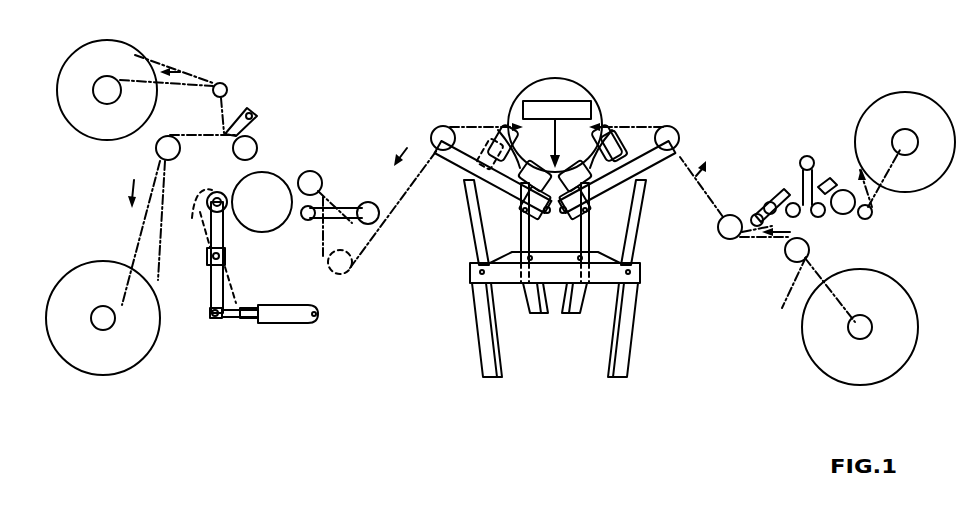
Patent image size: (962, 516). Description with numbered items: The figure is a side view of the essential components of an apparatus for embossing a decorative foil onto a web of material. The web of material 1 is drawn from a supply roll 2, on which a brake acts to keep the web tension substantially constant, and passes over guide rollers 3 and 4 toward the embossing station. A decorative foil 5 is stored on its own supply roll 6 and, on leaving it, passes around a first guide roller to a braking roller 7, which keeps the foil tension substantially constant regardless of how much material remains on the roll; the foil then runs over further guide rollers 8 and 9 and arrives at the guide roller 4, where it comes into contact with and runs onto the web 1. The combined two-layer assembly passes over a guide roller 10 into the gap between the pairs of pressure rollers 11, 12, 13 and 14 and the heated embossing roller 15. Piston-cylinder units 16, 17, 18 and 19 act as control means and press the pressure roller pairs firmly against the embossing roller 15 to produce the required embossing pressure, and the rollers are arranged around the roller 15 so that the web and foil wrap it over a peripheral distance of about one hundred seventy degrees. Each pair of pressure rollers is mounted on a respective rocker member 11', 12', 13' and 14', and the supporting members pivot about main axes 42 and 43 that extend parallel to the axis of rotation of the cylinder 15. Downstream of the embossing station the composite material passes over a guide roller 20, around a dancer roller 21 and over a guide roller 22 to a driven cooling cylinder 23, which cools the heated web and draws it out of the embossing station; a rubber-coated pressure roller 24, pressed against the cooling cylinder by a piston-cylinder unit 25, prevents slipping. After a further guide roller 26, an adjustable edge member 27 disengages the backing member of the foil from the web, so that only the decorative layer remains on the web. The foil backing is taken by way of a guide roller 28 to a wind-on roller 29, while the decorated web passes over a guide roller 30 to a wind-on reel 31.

The web of material 1 is at (786, 295).
The supply roll 2 is at (885, 358).
The guide roller 3 is at (790, 262).
The guide roller 4 is at (725, 240).
The embossing foil 5 is at (870, 216).
The supply roll 6 is at (930, 112).
The braking roller 7 is at (842, 190).
The guide roller 8 is at (800, 162).
The guide roller 9 is at (756, 214).
The guide roller 10 is at (678, 133).
The pressure roller pair 11 is at (613, 130).
The rocker member 11' is at (632, 146).
The pressure roller pair 12 is at (575, 156).
The rocker member 12' is at (601, 203).
The pressure roller pair 13 is at (535, 156).
The rocker member 13' is at (515, 203).
The pressure roller pair 14 is at (500, 130).
The rocker member 14' is at (481, 149).
The heated embossing roller 15 is at (561, 80).
The piston-cylinder unit 16 is at (623, 328).
The piston-cylinder unit 17 is at (577, 305).
The piston-cylinder unit 18 is at (531, 305).
The piston-cylinder unit 19 is at (483, 326).
The guide roller 20 is at (442, 127).
The dancer roller 21 is at (366, 203).
The guide roller 22 is at (312, 178).
The cooling cylinder 23 is at (272, 186).
The pressure roller 24 is at (206, 203).
The piston-cylinder unit 25 is at (301, 320).
The guide roller 26 is at (240, 149).
The knife 27 is at (240, 110).
The guide roller 28 is at (213, 83).
The wind-on roller 29 is at (126, 62).
The guide roller 30 is at (157, 144).
The wind-on reel 31 is at (93, 352).
The main axis 42 is at (561, 218).
The main axis 43 is at (528, 224).